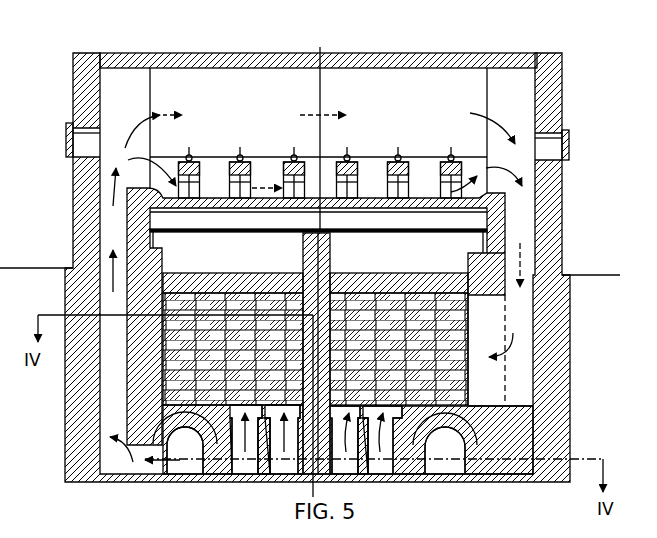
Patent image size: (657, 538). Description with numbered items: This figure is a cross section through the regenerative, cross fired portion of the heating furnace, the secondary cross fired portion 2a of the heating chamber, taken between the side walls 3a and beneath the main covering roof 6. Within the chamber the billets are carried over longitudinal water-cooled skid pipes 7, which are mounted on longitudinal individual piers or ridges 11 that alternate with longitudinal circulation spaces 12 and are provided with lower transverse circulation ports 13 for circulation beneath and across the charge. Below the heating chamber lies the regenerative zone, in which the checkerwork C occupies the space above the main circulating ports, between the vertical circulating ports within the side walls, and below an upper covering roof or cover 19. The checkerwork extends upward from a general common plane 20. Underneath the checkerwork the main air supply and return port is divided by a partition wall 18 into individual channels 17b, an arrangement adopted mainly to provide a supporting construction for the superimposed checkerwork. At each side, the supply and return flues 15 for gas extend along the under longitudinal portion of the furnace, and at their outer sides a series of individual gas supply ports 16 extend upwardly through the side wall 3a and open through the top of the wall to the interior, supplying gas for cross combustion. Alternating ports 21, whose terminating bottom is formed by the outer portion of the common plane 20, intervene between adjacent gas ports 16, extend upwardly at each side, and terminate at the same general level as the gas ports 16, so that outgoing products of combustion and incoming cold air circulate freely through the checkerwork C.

The side wall 3a is at (596, 96).
The main covering roof 6 is at (338, 53).
The secondary cross fired portion 2a is at (317, 138).
The longitudinal individual piers or ridges 11 is at (229, 161).
The longitudinal circulation spaces 12 is at (267, 166).
The lower transverse circulation ports 13 is at (392, 196).
The longitudinal water-cooled skid pipe 7 is at (448, 156).
The upper covering roof or cover 19 is at (273, 290).
The checkerwork C is at (241, 398).
The supply and return flue 15 is at (311, 443).
The individual gas supply port 16 is at (112, 378).
The individual channel 17b is at (413, 491).
The partition wall 18 is at (261, 468).
The general common plane 20 is at (488, 406).
The alternating port 21 is at (520, 310).